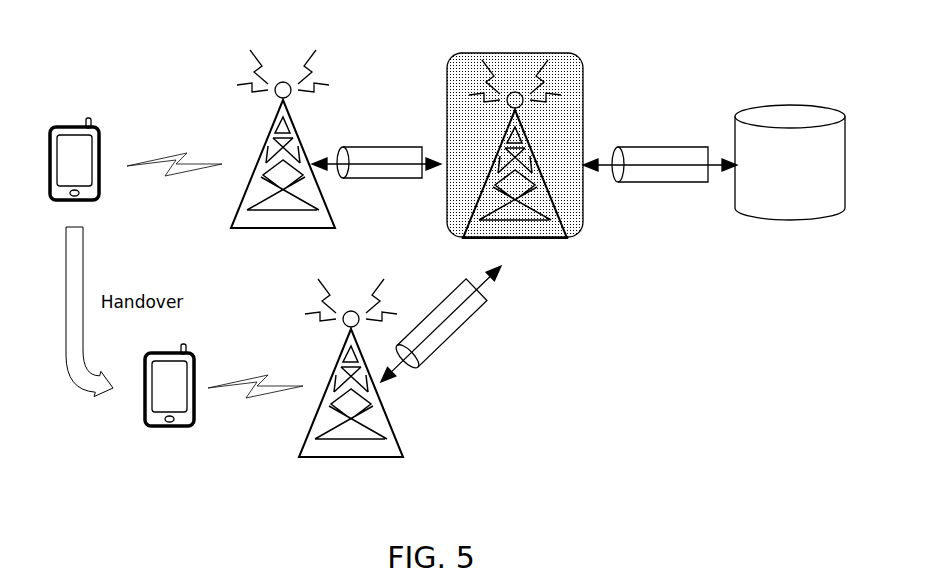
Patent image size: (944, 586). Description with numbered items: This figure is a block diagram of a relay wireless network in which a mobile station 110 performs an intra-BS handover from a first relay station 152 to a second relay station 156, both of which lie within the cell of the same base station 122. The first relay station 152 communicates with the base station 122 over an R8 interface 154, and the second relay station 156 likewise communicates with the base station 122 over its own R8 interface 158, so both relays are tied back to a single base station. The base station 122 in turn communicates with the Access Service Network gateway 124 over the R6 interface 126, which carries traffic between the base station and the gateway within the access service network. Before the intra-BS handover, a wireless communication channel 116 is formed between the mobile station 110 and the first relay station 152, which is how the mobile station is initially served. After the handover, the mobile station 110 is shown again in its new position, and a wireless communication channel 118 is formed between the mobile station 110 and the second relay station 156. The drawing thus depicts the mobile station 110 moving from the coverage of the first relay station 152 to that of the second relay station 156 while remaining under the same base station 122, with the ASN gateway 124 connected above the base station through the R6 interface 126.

The mobile station 110 is at (58, 124).
The wireless communication channel 116 is at (170, 178).
The wireless communication channel 118 is at (250, 402).
The base station 122 is at (583, 222).
The Access Service Network Gateway 124 is at (784, 113).
The R6 interface 126 is at (650, 147).
The first relay station 152 is at (335, 221).
The R8 interface 154 is at (380, 146).
The second relay station 156 is at (403, 451).
The R8 interface 158 is at (455, 335).